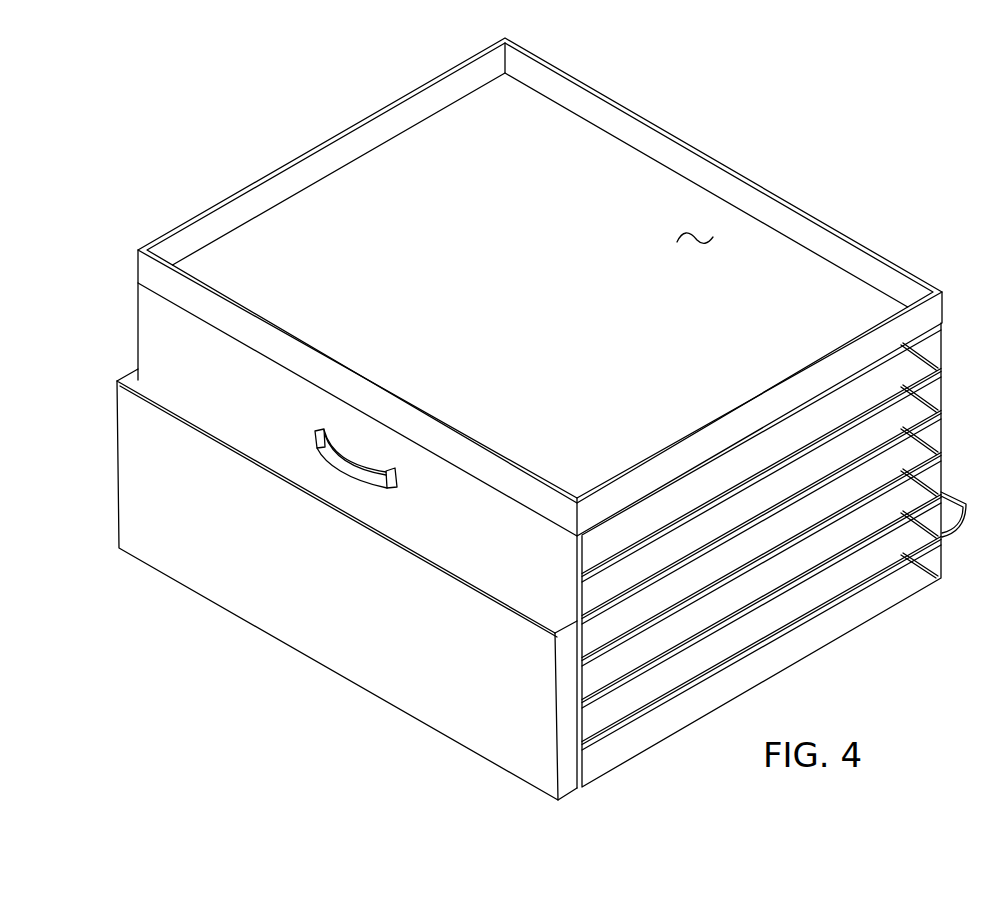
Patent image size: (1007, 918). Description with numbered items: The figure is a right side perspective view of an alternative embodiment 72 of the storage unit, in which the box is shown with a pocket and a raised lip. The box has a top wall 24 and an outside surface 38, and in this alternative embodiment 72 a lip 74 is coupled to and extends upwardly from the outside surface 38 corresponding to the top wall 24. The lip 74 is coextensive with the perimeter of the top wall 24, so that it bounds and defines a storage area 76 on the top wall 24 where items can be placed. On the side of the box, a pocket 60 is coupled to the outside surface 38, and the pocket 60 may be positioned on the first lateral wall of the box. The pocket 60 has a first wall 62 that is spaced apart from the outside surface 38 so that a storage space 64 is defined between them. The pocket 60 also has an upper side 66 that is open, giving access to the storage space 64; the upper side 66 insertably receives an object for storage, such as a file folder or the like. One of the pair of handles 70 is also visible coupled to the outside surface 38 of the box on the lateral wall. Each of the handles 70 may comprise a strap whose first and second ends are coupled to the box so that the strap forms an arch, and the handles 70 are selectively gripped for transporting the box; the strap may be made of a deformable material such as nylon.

The alternative embodiment 72 is at (846, 110).
The lip 74 is at (433, 79).
The storage area 76 is at (351, 118).
The top wall 24 is at (610, 160).
The outside surface 38 is at (698, 245).
The storage space 64 is at (155, 365).
The upper side 66 is at (135, 372).
The first wall 62 is at (250, 598).
The pocket 60 is at (557, 800).
The handles 70 is at (320, 429).